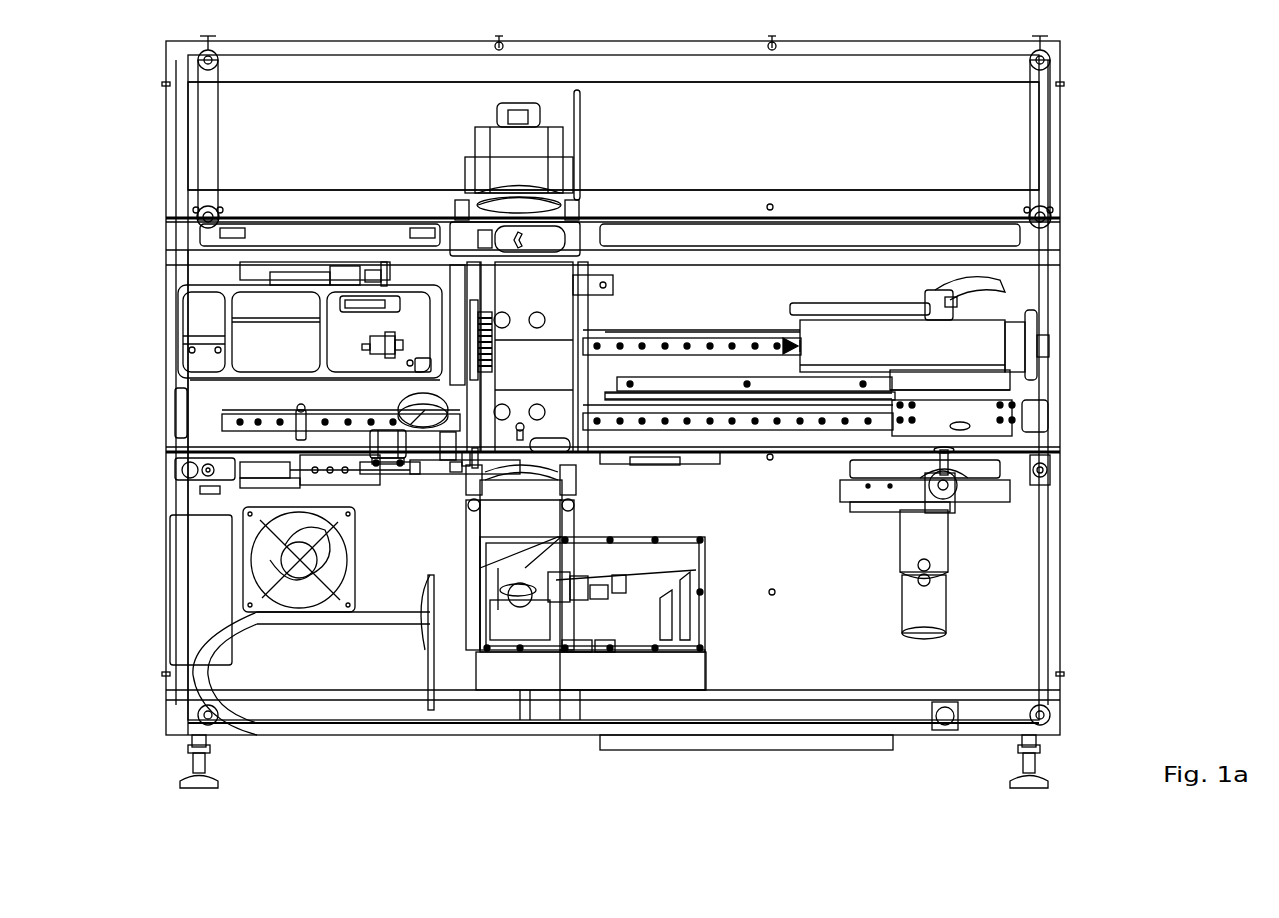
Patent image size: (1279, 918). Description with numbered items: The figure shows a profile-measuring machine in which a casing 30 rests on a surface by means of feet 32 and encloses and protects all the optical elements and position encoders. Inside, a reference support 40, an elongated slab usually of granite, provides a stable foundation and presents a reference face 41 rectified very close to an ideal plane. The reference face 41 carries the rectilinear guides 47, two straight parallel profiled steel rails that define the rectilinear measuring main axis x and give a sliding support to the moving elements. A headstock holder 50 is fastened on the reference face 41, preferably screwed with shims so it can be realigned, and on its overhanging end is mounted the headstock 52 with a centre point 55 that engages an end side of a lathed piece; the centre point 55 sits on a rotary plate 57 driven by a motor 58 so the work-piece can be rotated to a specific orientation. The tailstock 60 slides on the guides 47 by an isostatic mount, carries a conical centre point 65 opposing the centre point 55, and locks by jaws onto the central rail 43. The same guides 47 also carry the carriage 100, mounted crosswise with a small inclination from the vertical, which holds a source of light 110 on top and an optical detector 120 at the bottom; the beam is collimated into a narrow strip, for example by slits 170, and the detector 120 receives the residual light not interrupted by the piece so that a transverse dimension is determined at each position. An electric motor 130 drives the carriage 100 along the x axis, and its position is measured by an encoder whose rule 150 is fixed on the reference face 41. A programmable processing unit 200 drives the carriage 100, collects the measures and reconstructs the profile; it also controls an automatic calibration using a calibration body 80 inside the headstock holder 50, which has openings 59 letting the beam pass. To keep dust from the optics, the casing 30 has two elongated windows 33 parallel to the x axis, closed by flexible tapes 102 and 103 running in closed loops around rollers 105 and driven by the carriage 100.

The casing 30 is at (1060, 605).
The feet 32 is at (1042, 787).
The elongated windows 33 is at (781, 240).
The reference support 40 is at (993, 495).
The reference face 41 is at (595, 362).
The central rail 43 is at (838, 382).
The rectilinear guides 47 is at (295, 421).
The headstock holder 50 is at (202, 397).
The headstock 52 is at (454, 472).
The centre point 55 is at (497, 335).
The rotary plate 57 is at (495, 310).
The motor 58 is at (397, 470).
The openings 59 is at (357, 312).
The tailstock 60 is at (975, 343).
The conical centre point 65 is at (780, 345).
The calibration body 80 is at (390, 357).
The carriage 100 is at (556, 311).
The flexible tape 102 is at (901, 65).
The flexible tape 103 is at (1055, 487).
The rollers 105 is at (1032, 197).
The source of light 110 is at (548, 148).
The optical detector 120 is at (548, 527).
The electric motor 130 is at (912, 549).
The rule 150 is at (820, 400).
The slits 170 is at (545, 238).
The programmable processing unit 200 is at (205, 545).